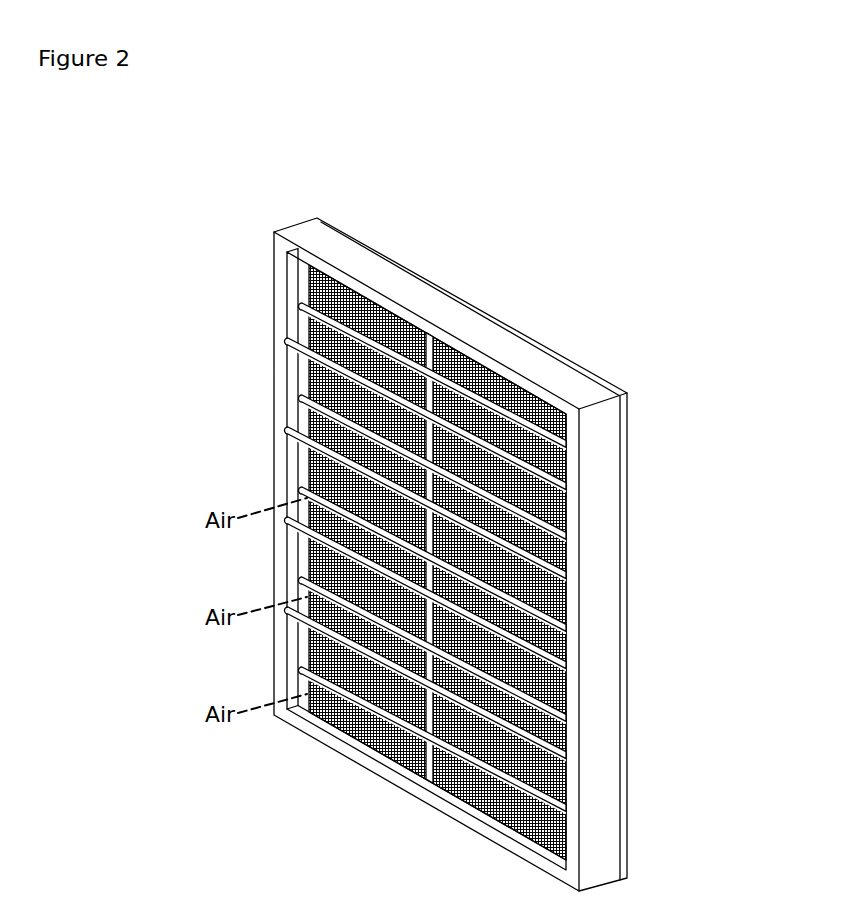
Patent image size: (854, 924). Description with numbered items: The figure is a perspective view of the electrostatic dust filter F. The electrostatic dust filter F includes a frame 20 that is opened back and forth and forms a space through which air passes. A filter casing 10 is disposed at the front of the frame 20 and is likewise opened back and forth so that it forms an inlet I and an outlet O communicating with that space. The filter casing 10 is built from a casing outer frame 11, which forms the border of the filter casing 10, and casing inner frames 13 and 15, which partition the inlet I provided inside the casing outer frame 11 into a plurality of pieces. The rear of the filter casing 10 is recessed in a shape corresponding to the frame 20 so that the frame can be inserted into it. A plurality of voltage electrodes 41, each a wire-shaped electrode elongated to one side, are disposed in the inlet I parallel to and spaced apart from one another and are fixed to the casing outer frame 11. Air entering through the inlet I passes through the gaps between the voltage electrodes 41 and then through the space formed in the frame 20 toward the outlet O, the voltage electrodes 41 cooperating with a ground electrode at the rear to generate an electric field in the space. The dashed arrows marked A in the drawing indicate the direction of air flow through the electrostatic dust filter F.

The filter casing 10 is at (491, 501).
The casing outer frame 11 is at (327, 272).
The casing inner frame 13 is at (366, 303).
The casing inner frame 15 is at (428, 340).
The frame 20 is at (622, 382).
The voltage electrode 41 is at (566, 715).
The electrostatic dust filter F is at (550, 336).
The air flow direction A is at (628, 410).
The outlet O is at (634, 606).
The inlet I is at (307, 580).